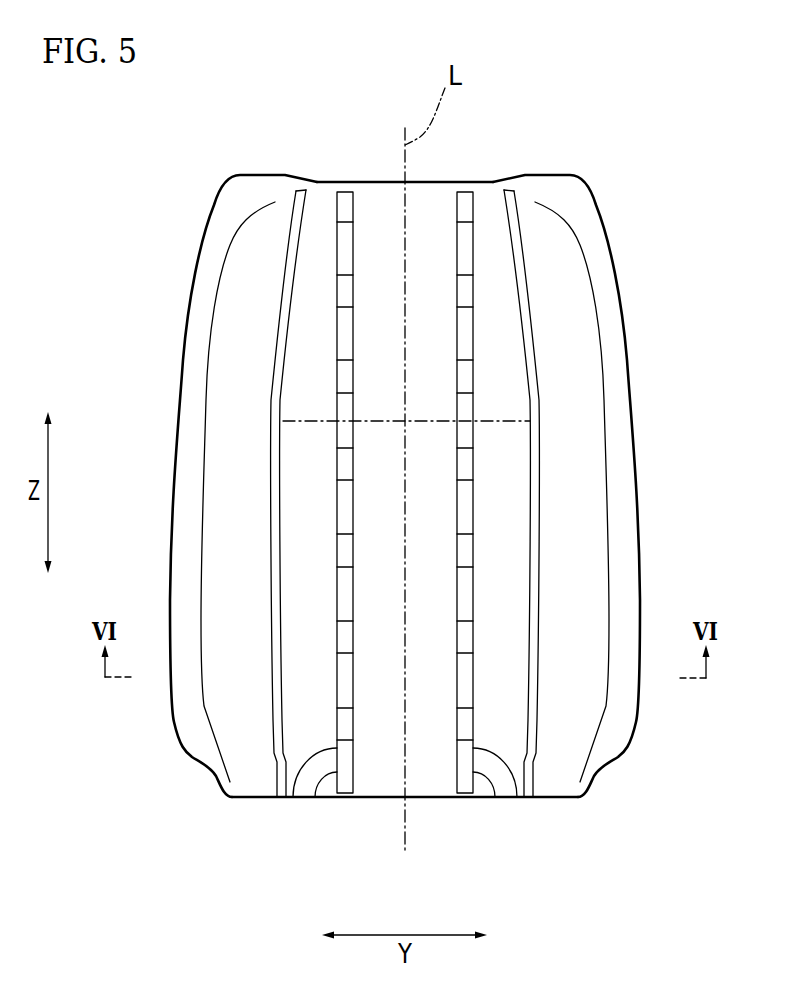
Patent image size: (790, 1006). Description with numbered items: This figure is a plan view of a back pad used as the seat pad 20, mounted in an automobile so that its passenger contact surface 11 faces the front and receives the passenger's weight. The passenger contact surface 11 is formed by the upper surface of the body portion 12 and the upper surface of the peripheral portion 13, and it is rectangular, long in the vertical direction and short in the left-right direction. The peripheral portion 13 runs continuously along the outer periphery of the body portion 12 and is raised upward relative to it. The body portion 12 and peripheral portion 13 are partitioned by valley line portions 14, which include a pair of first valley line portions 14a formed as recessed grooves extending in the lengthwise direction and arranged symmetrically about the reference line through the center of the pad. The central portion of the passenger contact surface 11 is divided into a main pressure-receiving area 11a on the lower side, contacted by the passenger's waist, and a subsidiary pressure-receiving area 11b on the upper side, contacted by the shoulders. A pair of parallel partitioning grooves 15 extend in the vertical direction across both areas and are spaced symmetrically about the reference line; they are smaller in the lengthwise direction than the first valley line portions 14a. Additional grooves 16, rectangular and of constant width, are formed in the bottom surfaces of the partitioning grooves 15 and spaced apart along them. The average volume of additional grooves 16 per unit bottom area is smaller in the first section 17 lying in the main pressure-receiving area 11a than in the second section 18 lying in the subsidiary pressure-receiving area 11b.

The seat pad 20 is at (640, 98).
The passenger contact surface 11 is at (508, 513).
The main pressure-receiving area 11a is at (450, 577).
The subsidiary pressure-receiving area 11b is at (450, 341).
The body portion 12 is at (302, 513).
The peripheral portion 13 is at (193, 421).
The valley line portions 14 is at (406, 493).
The first valley line portions 14a is at (282, 338).
The partitioning grooves 15 is at (315, 797).
The additional grooves 16 is at (337, 246).
The first section 17 is at (293, 797).
The second section 18 is at (345, 192).